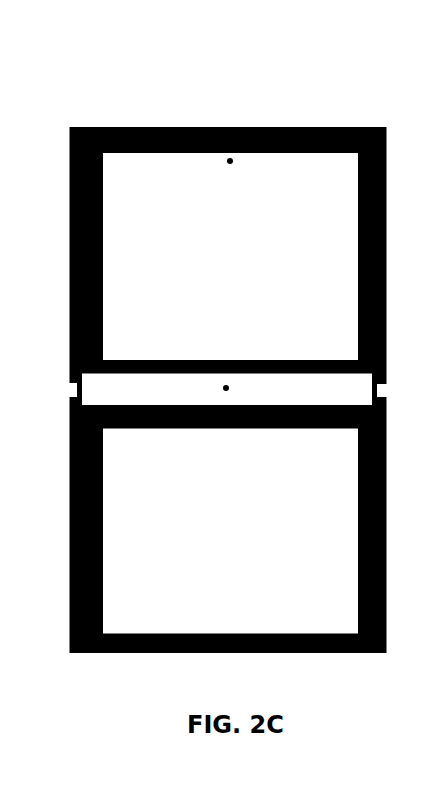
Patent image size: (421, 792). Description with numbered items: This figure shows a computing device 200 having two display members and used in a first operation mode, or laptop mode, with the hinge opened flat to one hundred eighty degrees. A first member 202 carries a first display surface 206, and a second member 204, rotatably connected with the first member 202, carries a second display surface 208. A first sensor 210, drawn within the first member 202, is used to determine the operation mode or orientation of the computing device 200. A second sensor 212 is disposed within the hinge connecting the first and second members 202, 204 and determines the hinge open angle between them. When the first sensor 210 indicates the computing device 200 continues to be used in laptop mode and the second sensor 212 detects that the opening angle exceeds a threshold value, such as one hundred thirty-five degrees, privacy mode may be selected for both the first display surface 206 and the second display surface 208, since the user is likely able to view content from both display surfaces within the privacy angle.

The computing device 200 is at (233, 377).
The first member 202 is at (122, 127).
The second member 204 is at (96, 654).
The first display surface 206 is at (249, 268).
The second display surface 208 is at (249, 544).
The first sensor 210 is at (230, 163).
The second sensor 212 is at (228, 386).